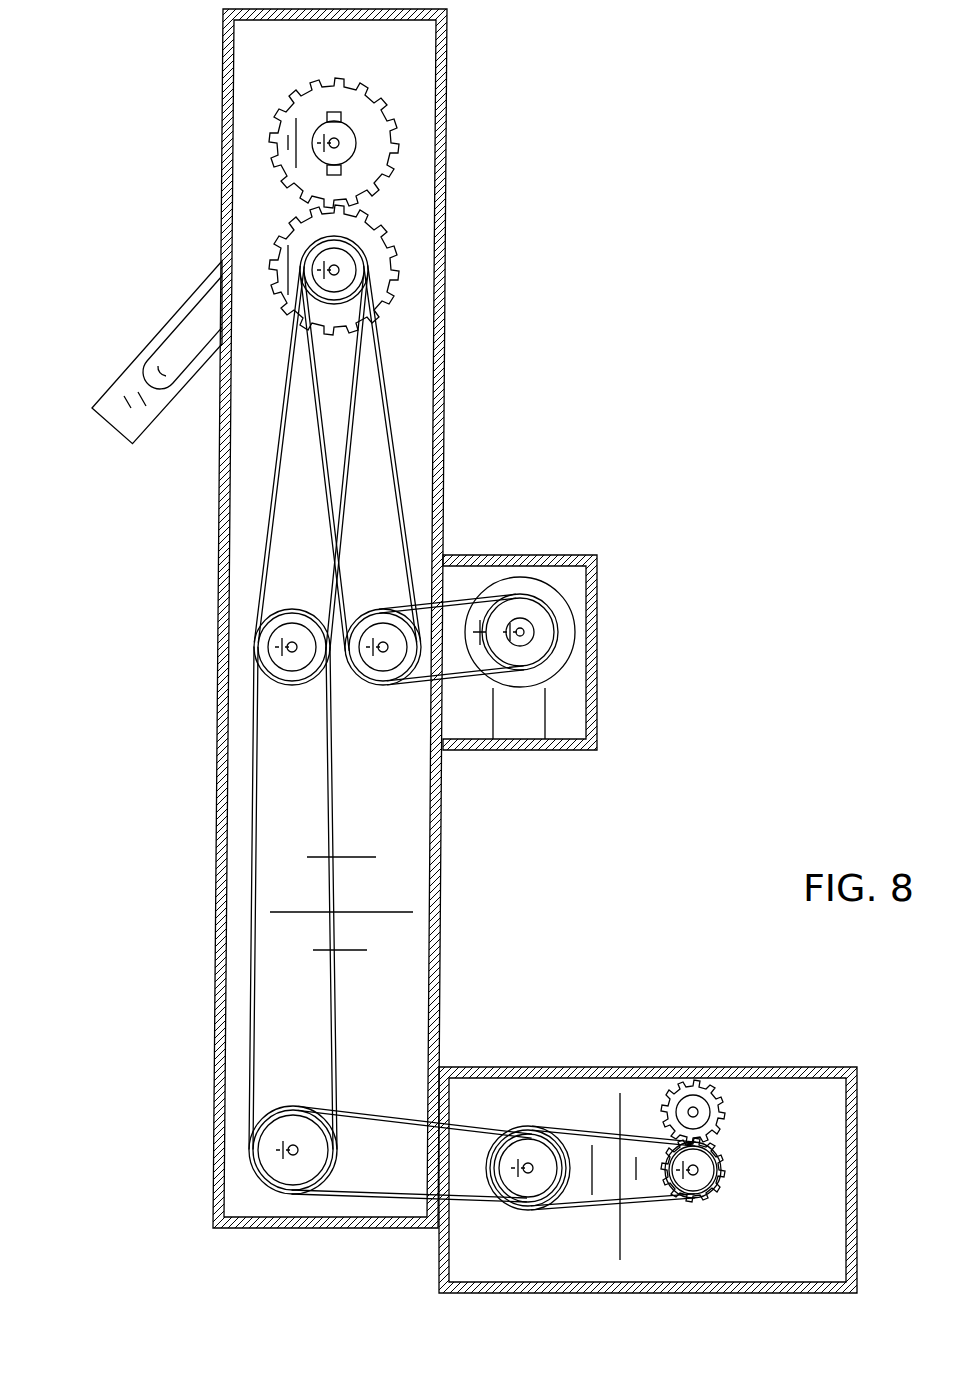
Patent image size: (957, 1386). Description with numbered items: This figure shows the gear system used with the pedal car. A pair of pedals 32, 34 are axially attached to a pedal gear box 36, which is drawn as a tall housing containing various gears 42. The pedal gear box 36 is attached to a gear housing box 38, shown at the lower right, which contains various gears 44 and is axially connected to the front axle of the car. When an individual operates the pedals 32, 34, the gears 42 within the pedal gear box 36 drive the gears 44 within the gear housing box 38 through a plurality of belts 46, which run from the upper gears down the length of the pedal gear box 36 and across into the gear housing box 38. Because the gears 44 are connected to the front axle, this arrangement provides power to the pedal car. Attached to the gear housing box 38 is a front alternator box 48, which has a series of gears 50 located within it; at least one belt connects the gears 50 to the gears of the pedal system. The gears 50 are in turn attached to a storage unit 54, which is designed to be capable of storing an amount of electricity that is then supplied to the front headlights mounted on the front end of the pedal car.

The pedal 32 is at (130, 372).
The pedal 34 is at (153, 332).
The pedal gear box 36 is at (447, 392).
The gear housing box 38 is at (612, 1067).
The gears 42 is at (399, 140).
The gears 44 is at (720, 1100).
The belts 46 is at (262, 900).
The front alternator box 48 is at (523, 558).
The gears 50 is at (573, 638).
The storage unit 54 is at (596, 733).